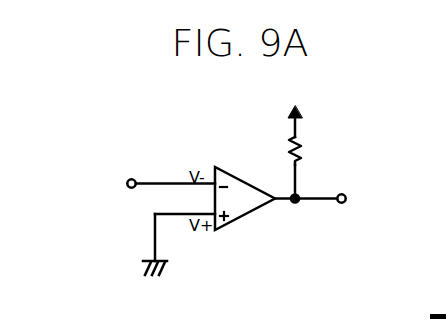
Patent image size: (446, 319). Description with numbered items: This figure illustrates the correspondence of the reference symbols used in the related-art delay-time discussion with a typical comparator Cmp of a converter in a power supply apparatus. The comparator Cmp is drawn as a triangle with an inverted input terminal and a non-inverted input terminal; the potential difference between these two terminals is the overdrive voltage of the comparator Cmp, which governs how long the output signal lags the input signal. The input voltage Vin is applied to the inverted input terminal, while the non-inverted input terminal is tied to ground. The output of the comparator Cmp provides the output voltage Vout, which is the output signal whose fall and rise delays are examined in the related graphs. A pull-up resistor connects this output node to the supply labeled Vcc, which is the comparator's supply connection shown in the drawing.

The comparator Cmp is at (248, 202).
The input voltage Vin is at (155, 184).
The output voltage Vout is at (334, 199).
The supply voltage with pull-up resistor Vcc is at (300, 143).